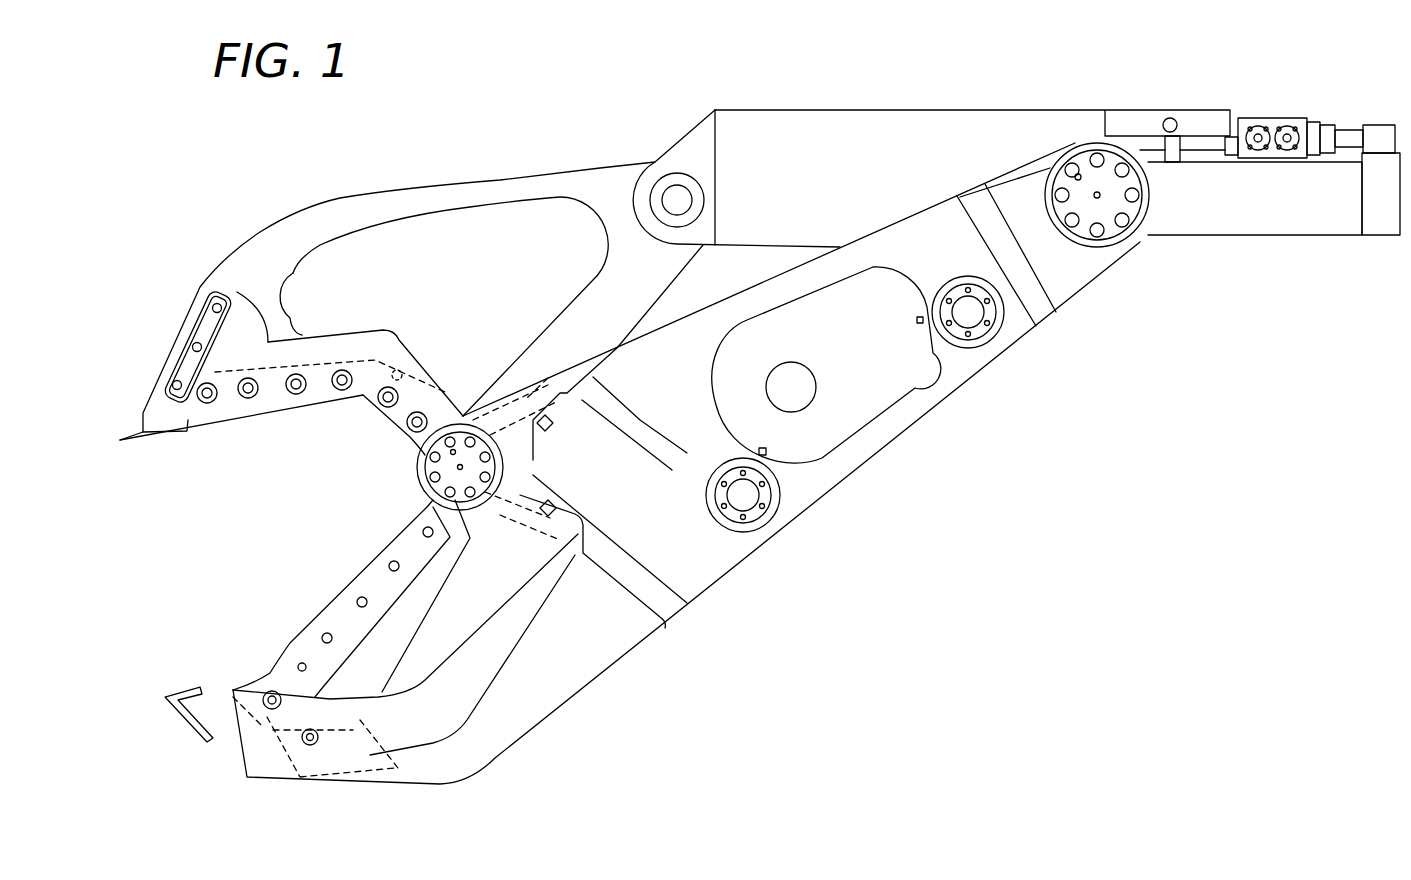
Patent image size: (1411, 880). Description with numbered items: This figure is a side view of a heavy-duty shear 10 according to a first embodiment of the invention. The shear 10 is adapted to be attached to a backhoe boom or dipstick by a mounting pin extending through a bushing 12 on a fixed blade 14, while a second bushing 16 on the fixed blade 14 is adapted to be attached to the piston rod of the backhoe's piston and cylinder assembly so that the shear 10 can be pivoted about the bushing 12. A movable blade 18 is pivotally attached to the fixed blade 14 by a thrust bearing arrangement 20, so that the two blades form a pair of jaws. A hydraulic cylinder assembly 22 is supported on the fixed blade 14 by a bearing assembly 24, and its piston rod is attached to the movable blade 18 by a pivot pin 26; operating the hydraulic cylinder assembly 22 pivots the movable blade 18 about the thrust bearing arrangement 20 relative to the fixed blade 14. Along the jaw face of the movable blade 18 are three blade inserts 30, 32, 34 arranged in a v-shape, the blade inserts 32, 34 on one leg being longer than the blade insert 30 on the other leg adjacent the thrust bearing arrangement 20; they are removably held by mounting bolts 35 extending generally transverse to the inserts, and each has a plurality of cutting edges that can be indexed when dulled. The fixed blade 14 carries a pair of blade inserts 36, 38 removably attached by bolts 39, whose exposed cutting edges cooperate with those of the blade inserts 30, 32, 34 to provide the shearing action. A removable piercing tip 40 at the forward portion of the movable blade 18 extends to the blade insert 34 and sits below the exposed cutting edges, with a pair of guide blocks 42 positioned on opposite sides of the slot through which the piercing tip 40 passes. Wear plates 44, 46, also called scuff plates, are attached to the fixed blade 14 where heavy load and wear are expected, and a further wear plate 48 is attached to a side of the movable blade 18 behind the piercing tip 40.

The shear 10 is at (527, 135).
The bushing 12 is at (768, 497).
The fixed blade 14 is at (622, 488).
The second bushing 16 is at (995, 317).
The movable blade 18 is at (500, 270).
The thrust bearing arrangement 20 is at (432, 480).
The hydraulic cylinder assembly 22 is at (1263, 212).
The bearing assembly 24 is at (1103, 213).
The pivot pin 26 is at (677, 199).
The blade insert 30 is at (397, 413).
The blade insert 32 is at (283, 398).
The blade insert 34 is at (228, 405).
The mounting bolts 35 is at (250, 380).
The blade insert 36 is at (367, 572).
The blade insert 38 is at (300, 655).
The bolts 39 is at (432, 536).
The piercing tip 40 is at (135, 437).
The guide blocks 42 is at (266, 682).
The wear plate 44 is at (180, 687).
The wear plate 46 is at (183, 727).
The wear plate 48 is at (200, 330).